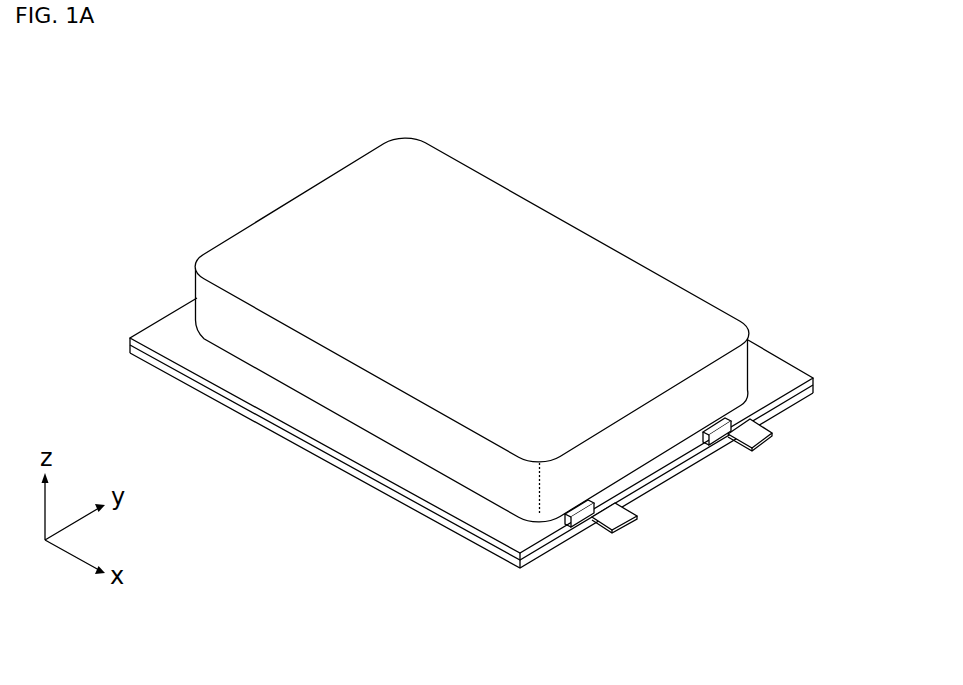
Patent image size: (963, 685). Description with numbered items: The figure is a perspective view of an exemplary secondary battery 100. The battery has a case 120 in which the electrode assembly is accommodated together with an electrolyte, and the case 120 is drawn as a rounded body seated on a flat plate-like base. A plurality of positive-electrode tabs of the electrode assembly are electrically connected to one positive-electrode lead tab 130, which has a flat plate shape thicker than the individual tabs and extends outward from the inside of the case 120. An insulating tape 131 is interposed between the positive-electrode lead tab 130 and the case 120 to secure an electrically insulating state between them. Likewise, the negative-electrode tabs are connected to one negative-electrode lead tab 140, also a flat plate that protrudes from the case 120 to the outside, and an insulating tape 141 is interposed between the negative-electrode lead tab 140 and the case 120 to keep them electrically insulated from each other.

The secondary battery 100 is at (727, 103).
The case 120 is at (590, 258).
The positive-electrode lead tab 130 is at (760, 436).
The insulating tape 131 is at (760, 416).
The negative-electrode lead tab 140 is at (620, 524).
The insulating tape 141 is at (580, 524).